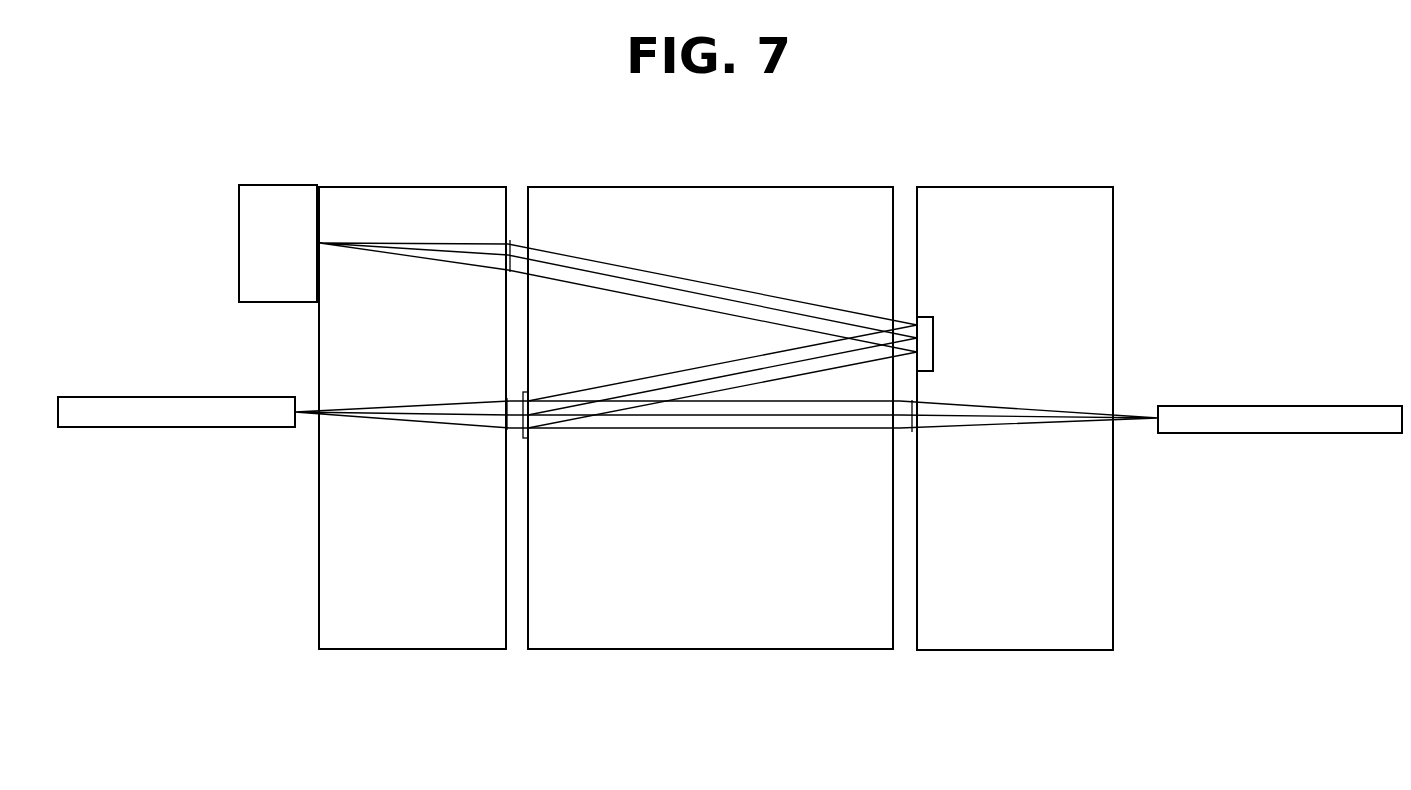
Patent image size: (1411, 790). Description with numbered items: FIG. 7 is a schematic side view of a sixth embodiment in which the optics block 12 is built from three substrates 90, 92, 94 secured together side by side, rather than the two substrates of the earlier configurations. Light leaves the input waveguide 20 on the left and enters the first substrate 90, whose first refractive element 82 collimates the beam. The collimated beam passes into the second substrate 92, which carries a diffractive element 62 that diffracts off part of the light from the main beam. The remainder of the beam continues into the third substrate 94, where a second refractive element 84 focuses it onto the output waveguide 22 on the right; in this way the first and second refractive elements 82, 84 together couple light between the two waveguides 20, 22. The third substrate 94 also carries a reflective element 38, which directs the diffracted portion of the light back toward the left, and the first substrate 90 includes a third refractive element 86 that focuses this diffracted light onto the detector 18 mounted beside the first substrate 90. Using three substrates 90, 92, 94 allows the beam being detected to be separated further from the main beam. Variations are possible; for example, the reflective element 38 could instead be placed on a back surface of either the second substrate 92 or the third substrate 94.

The optics block 12 is at (726, 418).
The detector 18 is at (278, 183).
The input waveguide 20 is at (128, 428).
The output waveguide 22 is at (1320, 402).
The reflective element 38 is at (917, 317).
The diffractive element 62 is at (521, 433).
The first refractive element 82 is at (508, 404).
The second refractive element 84 is at (913, 405).
The third refractive element 86 is at (512, 248).
The first substrate 90 is at (365, 652).
The second substrate 92 is at (580, 652).
The third substrate 94 is at (970, 654).